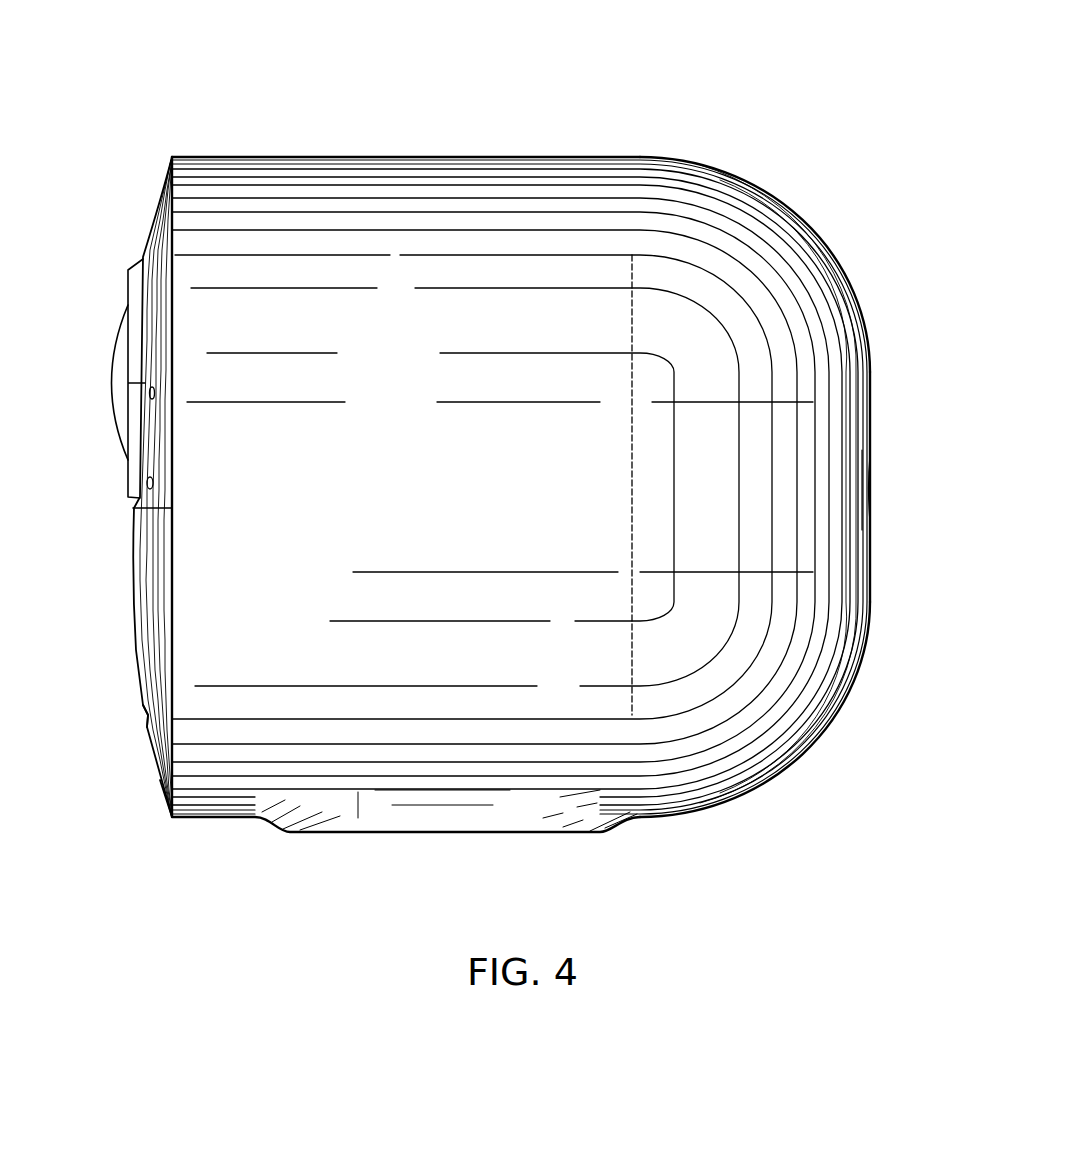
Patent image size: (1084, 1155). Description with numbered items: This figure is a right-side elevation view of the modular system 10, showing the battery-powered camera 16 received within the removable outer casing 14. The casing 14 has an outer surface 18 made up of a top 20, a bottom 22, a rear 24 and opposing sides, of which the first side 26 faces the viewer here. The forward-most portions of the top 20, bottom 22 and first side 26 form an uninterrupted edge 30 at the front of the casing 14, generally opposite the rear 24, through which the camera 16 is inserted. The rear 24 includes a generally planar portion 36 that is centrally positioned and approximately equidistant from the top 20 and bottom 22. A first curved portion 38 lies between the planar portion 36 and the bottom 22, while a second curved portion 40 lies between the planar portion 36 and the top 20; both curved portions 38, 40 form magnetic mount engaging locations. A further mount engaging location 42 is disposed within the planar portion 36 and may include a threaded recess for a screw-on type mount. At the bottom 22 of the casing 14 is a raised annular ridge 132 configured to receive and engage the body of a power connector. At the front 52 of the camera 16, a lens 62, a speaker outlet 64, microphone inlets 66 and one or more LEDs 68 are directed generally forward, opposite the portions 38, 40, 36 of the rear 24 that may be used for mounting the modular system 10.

The modular system 10 is at (336, 93).
The removable outer casing 14 is at (704, 108).
The camera 16 is at (158, 208).
The outer surface 18 is at (286, 156).
The top 20 is at (456, 156).
The bottom 22 is at (642, 820).
The rear 24 is at (871, 393).
The first side 26 is at (456, 514).
The edge 30 is at (170, 812).
The generally planar portion 36 is at (871, 448).
The first curved portion 38 is at (790, 768).
The second curved portion 40 is at (809, 220).
The mount engaging location 42 is at (871, 512).
The front 52 is at (133, 575).
The lens 62 is at (109, 355).
The speaker outlet 64 is at (145, 716).
The microphone inlets 66 is at (153, 390).
The LEDs 68 is at (152, 480).
The raised annular ridge 132 is at (288, 835).